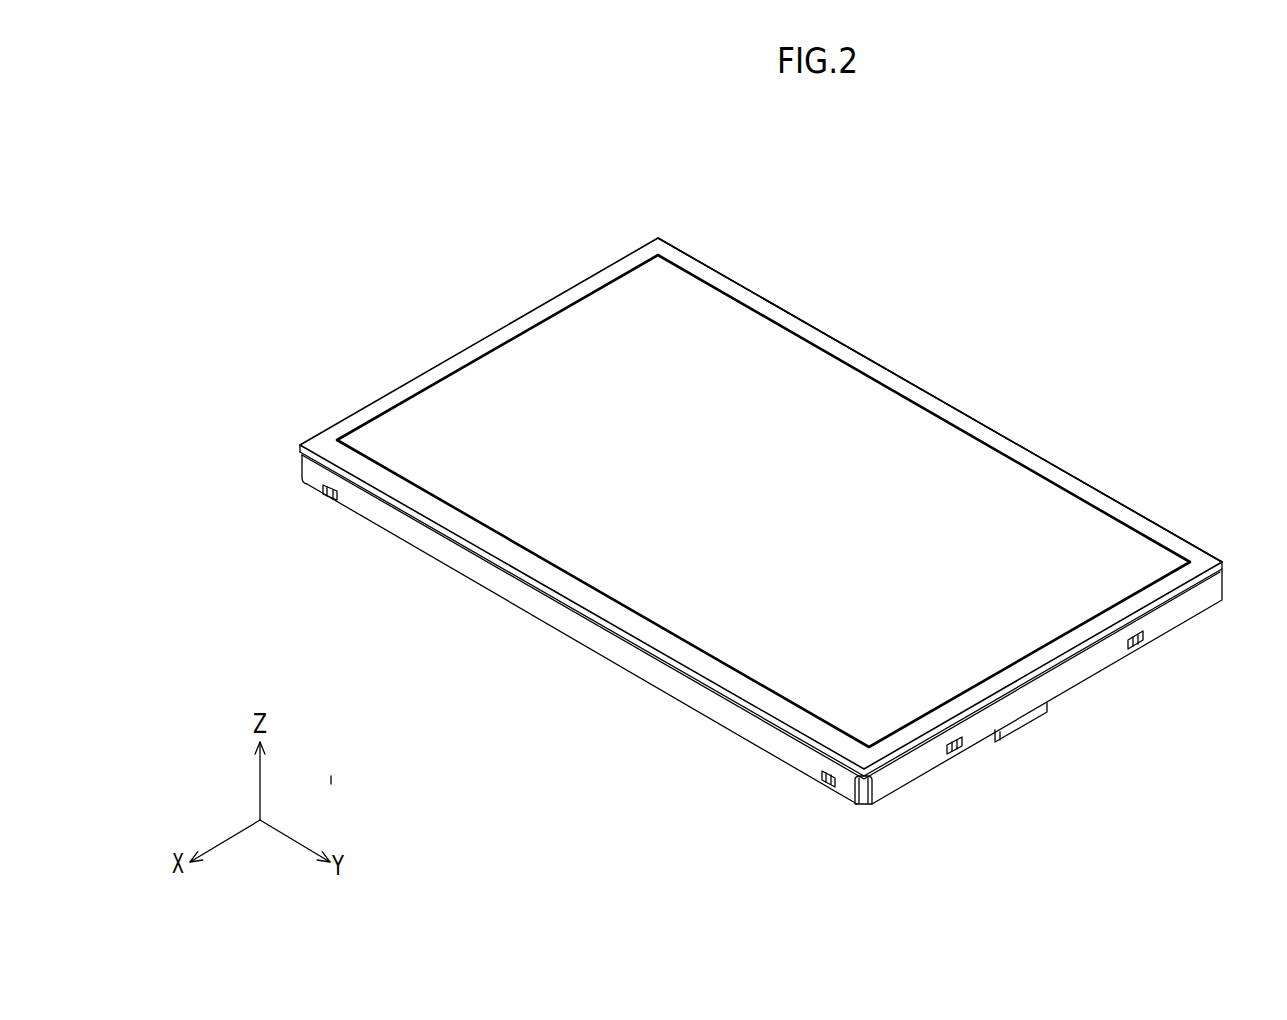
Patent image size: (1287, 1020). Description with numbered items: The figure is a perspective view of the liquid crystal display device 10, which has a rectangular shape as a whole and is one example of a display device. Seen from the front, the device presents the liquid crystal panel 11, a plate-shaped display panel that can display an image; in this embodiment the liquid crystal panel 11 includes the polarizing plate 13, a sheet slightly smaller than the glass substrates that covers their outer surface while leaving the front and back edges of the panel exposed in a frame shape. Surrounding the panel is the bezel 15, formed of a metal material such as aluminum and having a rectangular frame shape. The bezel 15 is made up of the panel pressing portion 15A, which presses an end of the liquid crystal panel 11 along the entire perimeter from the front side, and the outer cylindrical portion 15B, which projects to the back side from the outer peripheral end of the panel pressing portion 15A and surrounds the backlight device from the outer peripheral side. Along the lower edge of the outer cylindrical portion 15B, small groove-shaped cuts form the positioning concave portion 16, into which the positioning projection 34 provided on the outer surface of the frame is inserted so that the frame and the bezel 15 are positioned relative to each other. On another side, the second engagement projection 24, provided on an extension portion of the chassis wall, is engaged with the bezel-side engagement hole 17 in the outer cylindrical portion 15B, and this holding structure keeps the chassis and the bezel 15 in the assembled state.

The liquid crystal display device 10 is at (867, 233).
The liquid crystal panel 11 is at (930, 448).
The polarizing plate 13 is at (1025, 482).
The bezel 15 is at (692, 529).
The panel pressing portion 15A is at (343, 425).
The outer cylindrical portion 15B is at (719, 623).
The positioning concave portion 16 is at (325, 496).
The positioning projection 34 is at (331, 497).
The bezel-side engagement hole 17 is at (957, 752).
The second engagement projection 24 is at (957, 747).